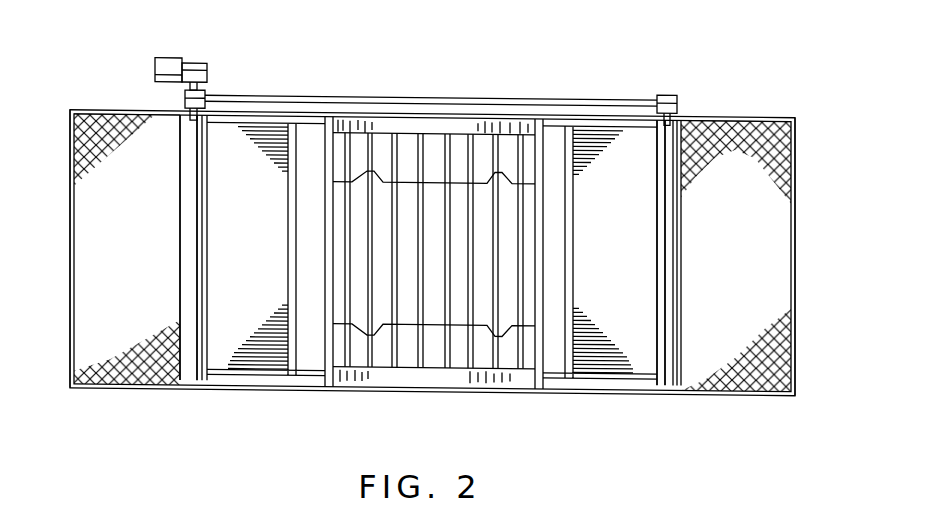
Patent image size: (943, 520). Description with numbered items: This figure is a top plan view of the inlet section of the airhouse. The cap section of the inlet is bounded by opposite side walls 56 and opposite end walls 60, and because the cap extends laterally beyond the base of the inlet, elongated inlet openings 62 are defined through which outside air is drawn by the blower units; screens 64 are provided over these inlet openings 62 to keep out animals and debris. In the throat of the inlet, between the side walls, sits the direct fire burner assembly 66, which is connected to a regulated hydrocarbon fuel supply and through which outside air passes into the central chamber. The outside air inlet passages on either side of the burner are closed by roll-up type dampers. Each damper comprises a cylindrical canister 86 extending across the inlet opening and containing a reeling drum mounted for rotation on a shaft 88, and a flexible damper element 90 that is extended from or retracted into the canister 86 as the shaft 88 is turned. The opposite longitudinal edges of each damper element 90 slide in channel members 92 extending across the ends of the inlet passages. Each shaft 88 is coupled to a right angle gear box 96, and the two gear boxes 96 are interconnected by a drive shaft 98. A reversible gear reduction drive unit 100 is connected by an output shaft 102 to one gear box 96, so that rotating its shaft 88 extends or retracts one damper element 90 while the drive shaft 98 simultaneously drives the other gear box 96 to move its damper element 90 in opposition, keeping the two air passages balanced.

The side walls 56 is at (745, 109).
The end walls 60 is at (70, 310).
The inlet openings 62 is at (92, 226).
The screens 64 is at (95, 107).
The direct fire burner assembly 66 is at (326, 314).
The canister 86 is at (190, 361).
The shaft 88 is at (193, 386).
The damper element 90 is at (258, 262).
The channel members 92 is at (300, 124).
The right angle gear box 96 is at (185, 96).
The drive shaft 98 is at (470, 92).
The reversible gear reduction drive unit 100 is at (170, 60).
The output shaft 102 is at (205, 80).